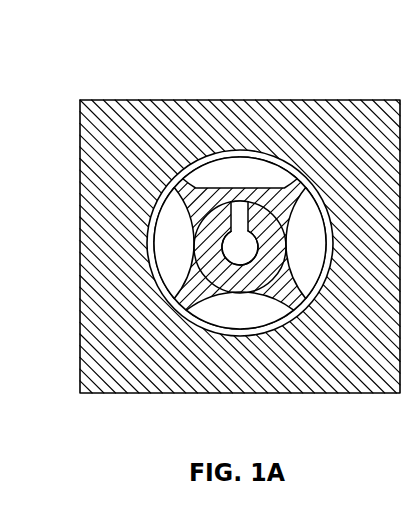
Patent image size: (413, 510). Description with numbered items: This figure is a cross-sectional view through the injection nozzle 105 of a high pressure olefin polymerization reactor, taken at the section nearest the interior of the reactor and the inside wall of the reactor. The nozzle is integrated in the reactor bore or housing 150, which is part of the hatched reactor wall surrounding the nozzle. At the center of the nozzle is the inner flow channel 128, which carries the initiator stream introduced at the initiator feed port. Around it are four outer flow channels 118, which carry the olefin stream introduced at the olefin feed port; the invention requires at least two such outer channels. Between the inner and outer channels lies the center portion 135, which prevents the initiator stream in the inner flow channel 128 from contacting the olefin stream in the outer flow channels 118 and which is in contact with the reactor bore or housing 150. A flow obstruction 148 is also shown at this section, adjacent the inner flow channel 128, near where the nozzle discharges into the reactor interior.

The injection nozzle 105 is at (222, 216).
The outer flow channel 118 is at (218, 305).
The inner flow channel 128 is at (253, 243).
The center portion 135 is at (265, 268).
The flow obstruction 148 is at (240, 216).
The reactor bore or housing 150 is at (152, 205).